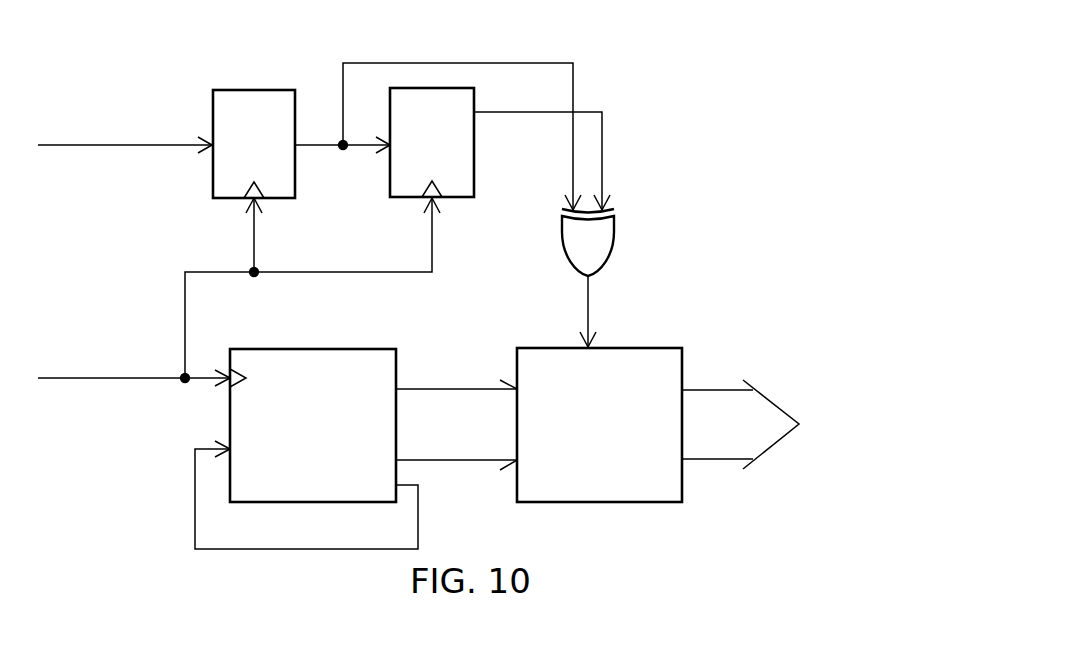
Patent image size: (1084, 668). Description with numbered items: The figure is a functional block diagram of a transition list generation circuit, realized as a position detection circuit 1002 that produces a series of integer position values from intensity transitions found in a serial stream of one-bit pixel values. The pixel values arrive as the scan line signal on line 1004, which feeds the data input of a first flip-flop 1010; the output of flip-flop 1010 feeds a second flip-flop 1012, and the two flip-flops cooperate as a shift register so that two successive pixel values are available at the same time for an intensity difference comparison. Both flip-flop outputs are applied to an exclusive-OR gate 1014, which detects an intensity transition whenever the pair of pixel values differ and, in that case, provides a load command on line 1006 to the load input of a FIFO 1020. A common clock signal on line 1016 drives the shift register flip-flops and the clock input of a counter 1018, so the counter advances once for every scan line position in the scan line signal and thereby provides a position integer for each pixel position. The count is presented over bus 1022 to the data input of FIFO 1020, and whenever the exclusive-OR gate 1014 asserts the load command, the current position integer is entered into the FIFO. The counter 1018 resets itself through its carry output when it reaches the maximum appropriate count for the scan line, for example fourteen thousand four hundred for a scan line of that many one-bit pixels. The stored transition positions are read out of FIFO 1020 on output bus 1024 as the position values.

The position detection circuit 1002 is at (649, 59).
The line 1004 is at (162, 146).
The load signal line 1006 is at (589, 305).
The flip-flop 1010 is at (235, 90).
The flip-flop 1012 is at (400, 198).
The exclusive-OR gate 1014 is at (614, 234).
The clock line 1016 is at (184, 322).
The counter 1018 is at (305, 349).
The FIFO 1020 is at (550, 348).
The counter output bus 1022 is at (488, 389).
The position output bus 1024 is at (774, 391).